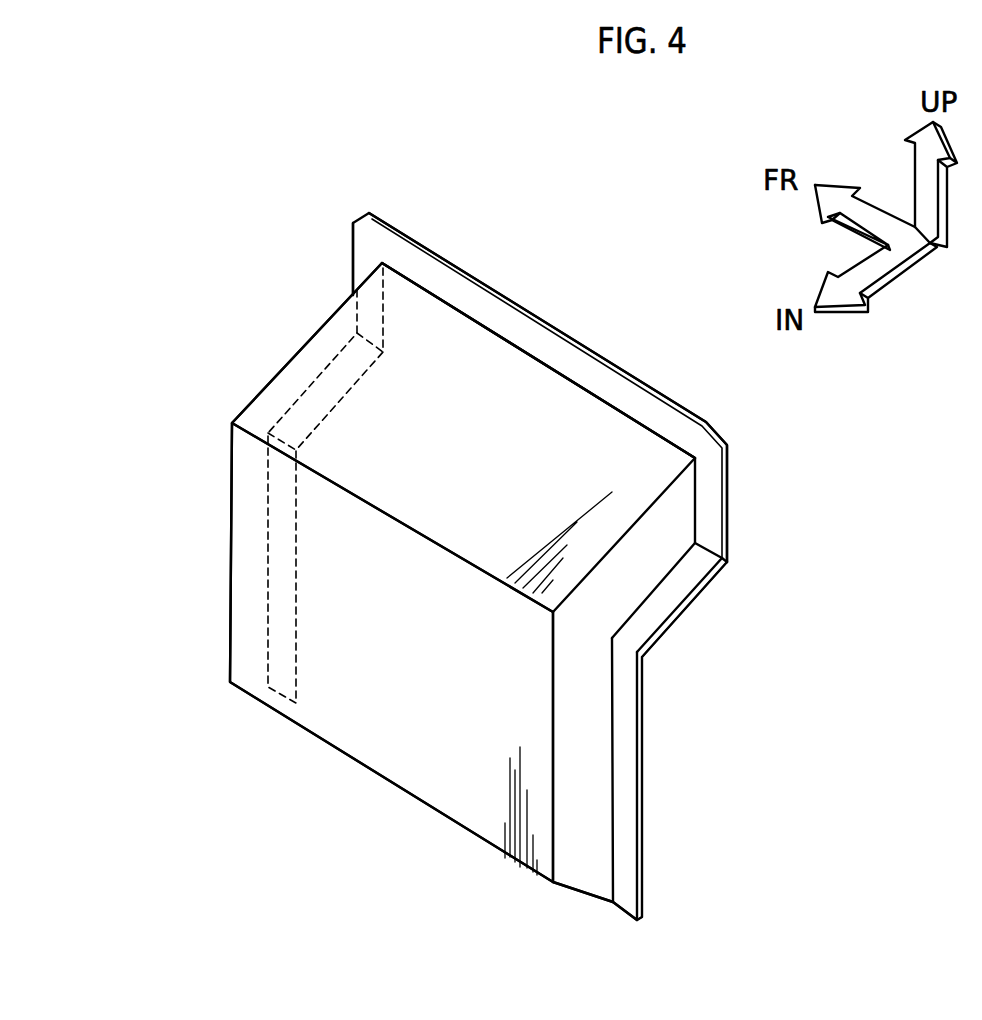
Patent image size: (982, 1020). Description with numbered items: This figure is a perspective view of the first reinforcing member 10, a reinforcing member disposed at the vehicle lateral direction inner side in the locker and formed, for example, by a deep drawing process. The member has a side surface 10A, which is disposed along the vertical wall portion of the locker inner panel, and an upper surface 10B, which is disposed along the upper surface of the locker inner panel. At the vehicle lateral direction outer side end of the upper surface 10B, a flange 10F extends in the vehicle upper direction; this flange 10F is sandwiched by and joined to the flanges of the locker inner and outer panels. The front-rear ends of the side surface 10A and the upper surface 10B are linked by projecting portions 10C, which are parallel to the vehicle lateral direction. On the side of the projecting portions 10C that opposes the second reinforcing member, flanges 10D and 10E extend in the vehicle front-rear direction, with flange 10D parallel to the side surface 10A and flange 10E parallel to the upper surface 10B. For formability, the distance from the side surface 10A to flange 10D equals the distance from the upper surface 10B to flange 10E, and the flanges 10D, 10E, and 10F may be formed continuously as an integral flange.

The first reinforcing member 10 is at (677, 401).
The side surface 10A is at (382, 743).
The upper surface 10B is at (567, 410).
The projecting portions 10C is at (250, 508).
The flange 10D is at (268, 572).
The flange 10E is at (320, 375).
The flange 10F is at (555, 332).